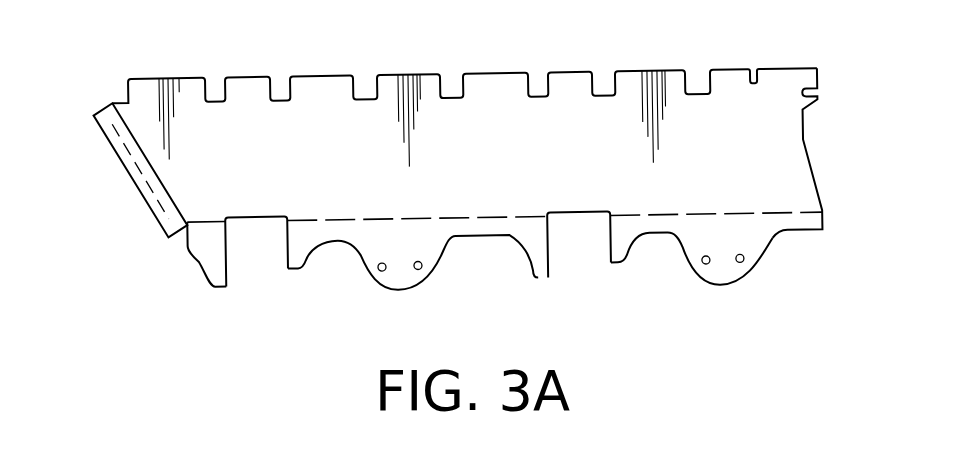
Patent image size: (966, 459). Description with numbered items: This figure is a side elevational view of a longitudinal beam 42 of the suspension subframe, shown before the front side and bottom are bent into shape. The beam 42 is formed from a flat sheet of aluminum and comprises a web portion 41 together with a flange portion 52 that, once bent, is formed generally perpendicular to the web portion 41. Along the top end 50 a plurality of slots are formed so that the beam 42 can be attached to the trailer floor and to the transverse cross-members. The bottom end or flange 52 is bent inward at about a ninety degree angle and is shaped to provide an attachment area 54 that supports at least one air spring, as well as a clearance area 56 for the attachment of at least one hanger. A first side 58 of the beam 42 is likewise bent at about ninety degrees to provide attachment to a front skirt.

The web portion 41 is at (760, 137).
The longitudinal beam 42 is at (750, 178).
The top end 50 is at (634, 70).
The flange portion 52 is at (467, 227).
The attachment area 54 is at (392, 277).
The clearance area 56 is at (247, 218).
The first side 58 is at (137, 180).